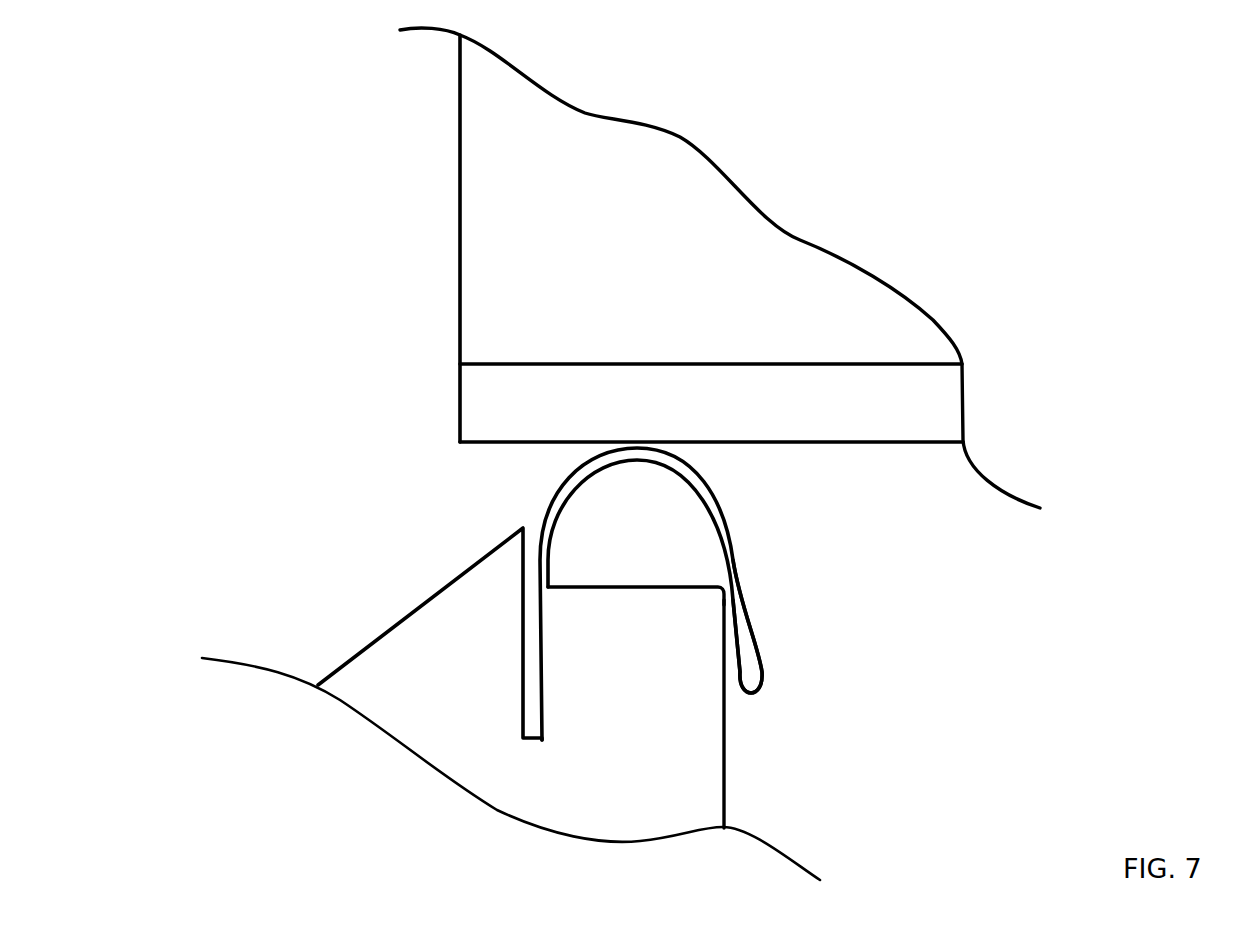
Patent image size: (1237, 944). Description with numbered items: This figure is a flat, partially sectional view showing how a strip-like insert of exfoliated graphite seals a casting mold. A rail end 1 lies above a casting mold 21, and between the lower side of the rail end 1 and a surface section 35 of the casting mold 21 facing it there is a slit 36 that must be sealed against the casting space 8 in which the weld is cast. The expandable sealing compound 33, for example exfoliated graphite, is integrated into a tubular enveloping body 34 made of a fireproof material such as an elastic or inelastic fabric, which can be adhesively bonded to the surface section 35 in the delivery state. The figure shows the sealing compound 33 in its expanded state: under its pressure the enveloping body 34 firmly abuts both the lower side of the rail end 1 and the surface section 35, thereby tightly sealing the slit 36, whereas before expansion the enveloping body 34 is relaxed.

The rail end 1 is at (458, 260).
The casting space 8 is at (295, 469).
The casting mold 21 is at (683, 773).
The sealing compound 33 is at (668, 517).
The enveloping body 34 is at (748, 597).
The surface section 35 is at (612, 588).
The slit 36 is at (470, 497).